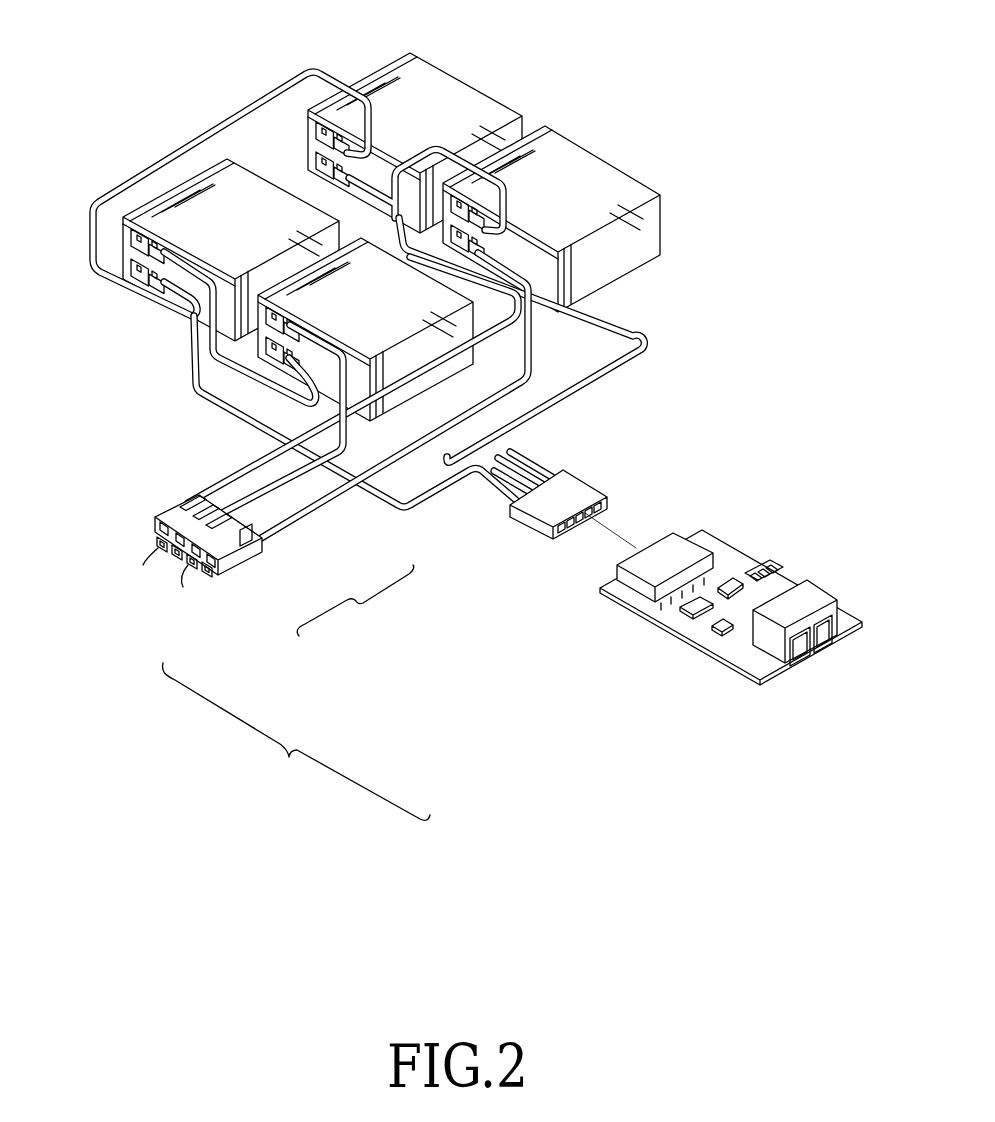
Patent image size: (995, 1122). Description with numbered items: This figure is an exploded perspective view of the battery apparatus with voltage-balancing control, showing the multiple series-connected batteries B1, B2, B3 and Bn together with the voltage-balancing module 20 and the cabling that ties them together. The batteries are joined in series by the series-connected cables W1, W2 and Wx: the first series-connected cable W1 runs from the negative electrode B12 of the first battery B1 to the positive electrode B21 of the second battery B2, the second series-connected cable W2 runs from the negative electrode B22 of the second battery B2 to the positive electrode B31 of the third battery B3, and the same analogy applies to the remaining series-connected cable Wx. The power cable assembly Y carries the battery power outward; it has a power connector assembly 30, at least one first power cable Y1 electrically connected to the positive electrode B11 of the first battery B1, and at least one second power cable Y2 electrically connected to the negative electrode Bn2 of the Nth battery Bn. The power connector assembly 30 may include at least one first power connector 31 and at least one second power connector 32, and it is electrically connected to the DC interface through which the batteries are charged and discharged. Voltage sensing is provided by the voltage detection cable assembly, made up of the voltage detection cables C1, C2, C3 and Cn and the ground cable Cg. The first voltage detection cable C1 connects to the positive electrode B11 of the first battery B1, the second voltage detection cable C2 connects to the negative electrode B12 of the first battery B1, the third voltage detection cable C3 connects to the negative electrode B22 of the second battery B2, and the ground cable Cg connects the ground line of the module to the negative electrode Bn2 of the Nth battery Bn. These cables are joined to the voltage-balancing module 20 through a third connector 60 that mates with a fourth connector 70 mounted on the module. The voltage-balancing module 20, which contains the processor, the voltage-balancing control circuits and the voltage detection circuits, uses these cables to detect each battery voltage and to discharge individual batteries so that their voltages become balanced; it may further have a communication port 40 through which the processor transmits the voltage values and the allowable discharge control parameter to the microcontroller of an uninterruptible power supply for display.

The first series-connected battery B1 is at (470, 328).
The second series-connected battery B2 is at (260, 188).
The third series-connected battery B3 is at (441, 78).
The Nth series-connected battery Bn is at (613, 185).
The positive electrode of the first battery B11 is at (273, 327).
The negative electrode of the first battery B12 is at (273, 353).
The positive electrode of the second battery B21 is at (120, 233).
The negative electrode of the second battery B22 is at (148, 272).
The positive electrode of the third battery B31 is at (308, 131).
The negative electrode of the Nth battery Bn2 is at (443, 243).
The first series-connected cable W1 is at (207, 336).
The second series-connected cable W2 is at (205, 135).
The series-connected cable Wx is at (500, 183).
The power cable assembly Y is at (297, 692).
The first power cable Y1 is at (243, 476).
The second power cable Y2 is at (327, 510).
The power connector assembly 30 is at (240, 567).
The first power connector 31 is at (157, 540).
The second power connector 32 is at (203, 565).
The ground cable Cg is at (452, 467).
The first voltage detection cable C1 is at (542, 482).
The second voltage detection cable C2 is at (505, 462).
The third voltage detection cable C3 is at (512, 480).
The Nth voltage detection cable Cn is at (493, 478).
The third connector 60 is at (587, 490).
The voltage-balancing module 20 is at (680, 640).
The fourth connector 70 is at (693, 550).
The communication port 40 is at (810, 593).